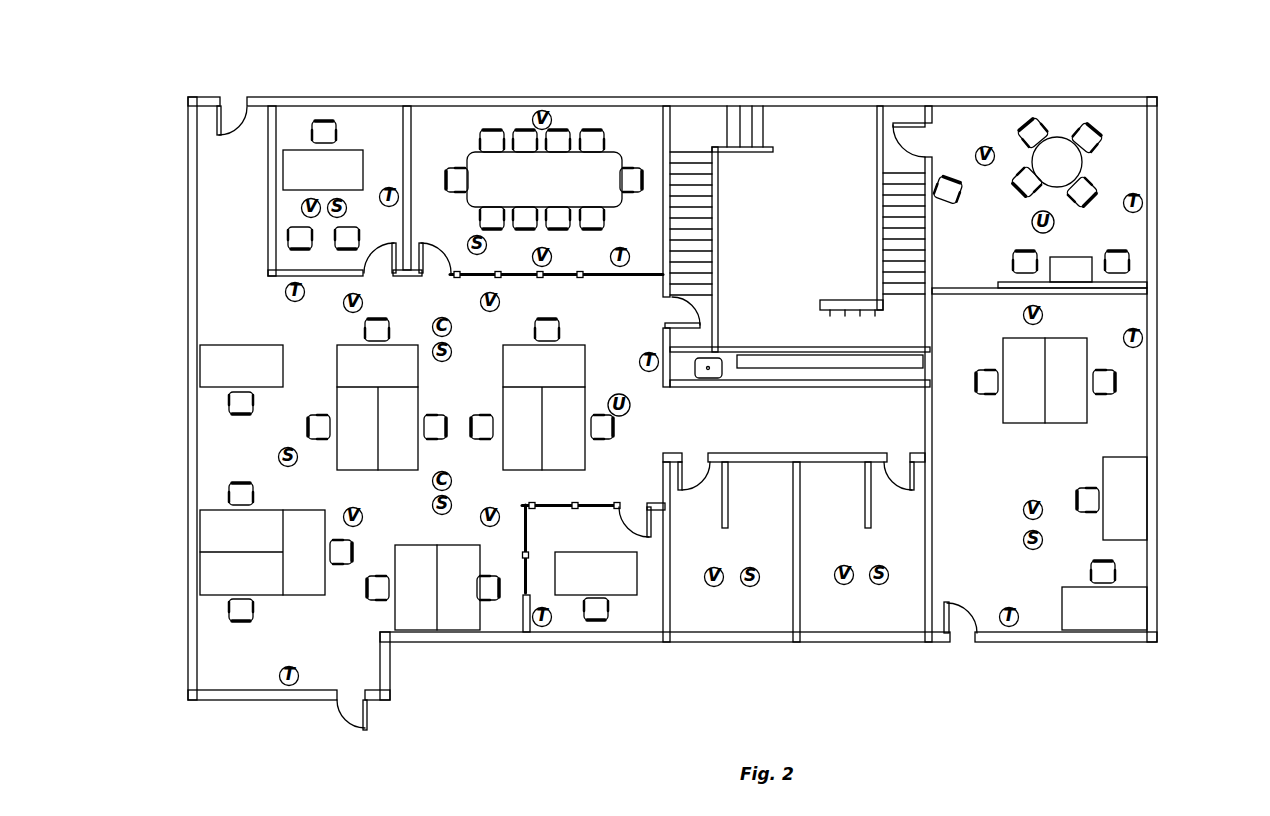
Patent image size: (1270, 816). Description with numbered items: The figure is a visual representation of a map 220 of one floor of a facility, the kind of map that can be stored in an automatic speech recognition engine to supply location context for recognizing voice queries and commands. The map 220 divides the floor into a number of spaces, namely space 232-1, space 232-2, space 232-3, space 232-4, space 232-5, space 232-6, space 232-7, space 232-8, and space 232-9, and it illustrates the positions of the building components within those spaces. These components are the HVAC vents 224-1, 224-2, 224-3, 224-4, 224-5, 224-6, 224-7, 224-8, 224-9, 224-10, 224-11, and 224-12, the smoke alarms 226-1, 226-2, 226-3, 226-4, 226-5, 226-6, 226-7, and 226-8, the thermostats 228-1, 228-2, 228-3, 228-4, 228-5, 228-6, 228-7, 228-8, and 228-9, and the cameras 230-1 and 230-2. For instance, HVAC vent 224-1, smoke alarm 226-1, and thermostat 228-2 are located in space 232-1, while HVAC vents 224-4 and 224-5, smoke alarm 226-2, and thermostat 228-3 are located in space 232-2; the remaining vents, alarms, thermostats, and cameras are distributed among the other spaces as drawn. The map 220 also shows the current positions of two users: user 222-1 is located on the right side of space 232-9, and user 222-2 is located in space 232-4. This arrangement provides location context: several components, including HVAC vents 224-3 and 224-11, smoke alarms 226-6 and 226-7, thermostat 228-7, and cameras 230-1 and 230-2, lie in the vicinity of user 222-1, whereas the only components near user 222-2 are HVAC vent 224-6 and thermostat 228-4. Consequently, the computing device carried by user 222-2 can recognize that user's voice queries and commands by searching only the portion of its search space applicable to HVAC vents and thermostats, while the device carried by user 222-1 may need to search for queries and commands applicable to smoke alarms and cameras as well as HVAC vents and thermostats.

The map 220 is at (138, 58).
The user 222-1 is at (630, 408).
The user 222-2 is at (1032, 225).
The HVAC vent 224-1 is at (301, 210).
The HVAC vent 224-2 is at (363, 303).
The HVAC vent 224-3 is at (500, 302).
The HVAC vent 224-4 is at (542, 110).
The HVAC vent 224-5 is at (542, 247).
The HVAC vent 224-6 is at (985, 146).
The HVAC vent 224-7 is at (1025, 310).
The HVAC vent 224-8 is at (1033, 500).
The HVAC vent 224-9 is at (844, 565).
The HVAC vent 224-10 is at (714, 567).
The HVAC vent 224-11 is at (490, 507).
The HVAC vent 224-12 is at (348, 508).
The smoke alarm 226-1 is at (328, 203).
The smoke alarm 226-2 is at (467, 246).
The smoke alarm 226-3 is at (1033, 550).
The smoke alarm 226-4 is at (879, 585).
The smoke alarm 226-5 is at (750, 587).
The smoke alarm 226-6 is at (452, 355).
The smoke alarm 226-7 is at (432, 505).
The smoke alarm 226-8 is at (278, 458).
The thermostat 228-1 is at (285, 292).
The thermostat 228-2 is at (389, 187).
The thermostat 228-3 is at (630, 255).
The thermostat 228-4 is at (1140, 210).
The thermostat 228-5 is at (1140, 346).
The thermostat 228-6 is at (1009, 627).
The thermostat 228-7 is at (649, 352).
The thermostat 228-8 is at (542, 627).
The thermostat 228-9 is at (289, 686).
The camera 230-1 is at (452, 327).
The camera 230-2 is at (452, 481).
The space 232-1 is at (355, 125).
The space 232-2 is at (612, 125).
The space 232-3 is at (808, 145).
The space 232-4 is at (1120, 158).
The space 232-5 is at (1122, 431).
The space 232-6 is at (801, 399).
The space 232-7 is at (892, 615).
The space 232-8 is at (762, 615).
The space 232-9 is at (312, 348).